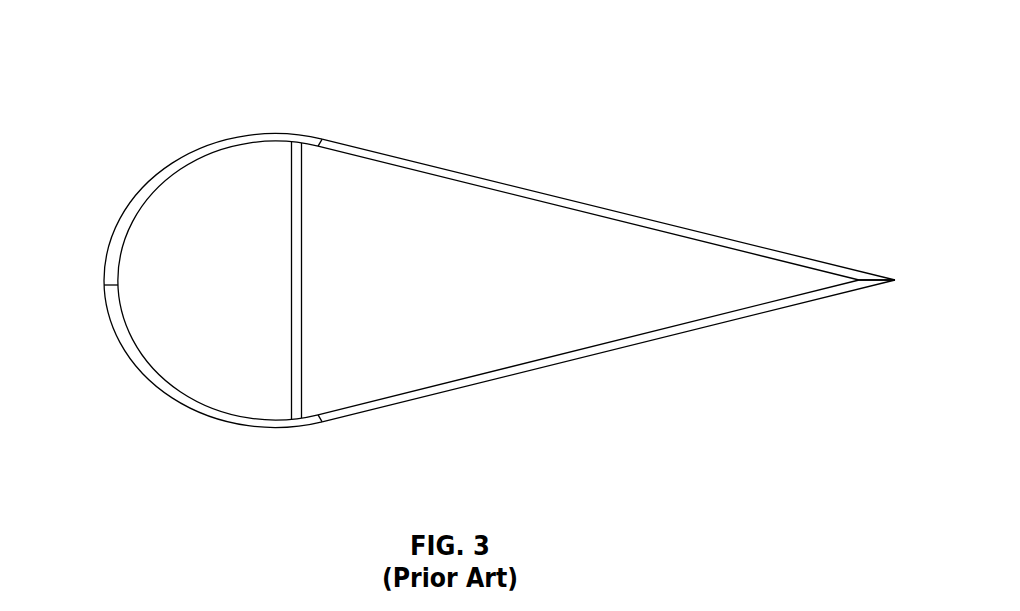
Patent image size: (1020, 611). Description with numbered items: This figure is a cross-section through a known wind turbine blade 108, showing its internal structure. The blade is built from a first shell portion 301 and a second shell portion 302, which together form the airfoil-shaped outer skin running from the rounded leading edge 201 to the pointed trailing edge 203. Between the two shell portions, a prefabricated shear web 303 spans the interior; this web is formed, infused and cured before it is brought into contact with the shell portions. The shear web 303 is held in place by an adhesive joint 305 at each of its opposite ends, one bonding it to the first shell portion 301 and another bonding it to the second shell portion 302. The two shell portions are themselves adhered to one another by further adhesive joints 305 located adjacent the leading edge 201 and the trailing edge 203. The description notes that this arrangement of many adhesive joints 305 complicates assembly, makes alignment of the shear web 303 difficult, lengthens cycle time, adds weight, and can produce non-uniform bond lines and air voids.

The wind turbine blade 108 is at (152, 67).
The leading edge 201 is at (114, 217).
The trailing edge 203 is at (838, 303).
The first shell portion 301 is at (603, 352).
The second shell portion 302 is at (465, 172).
The shear web 303 is at (302, 245).
The adhesive joint 305 is at (298, 136).